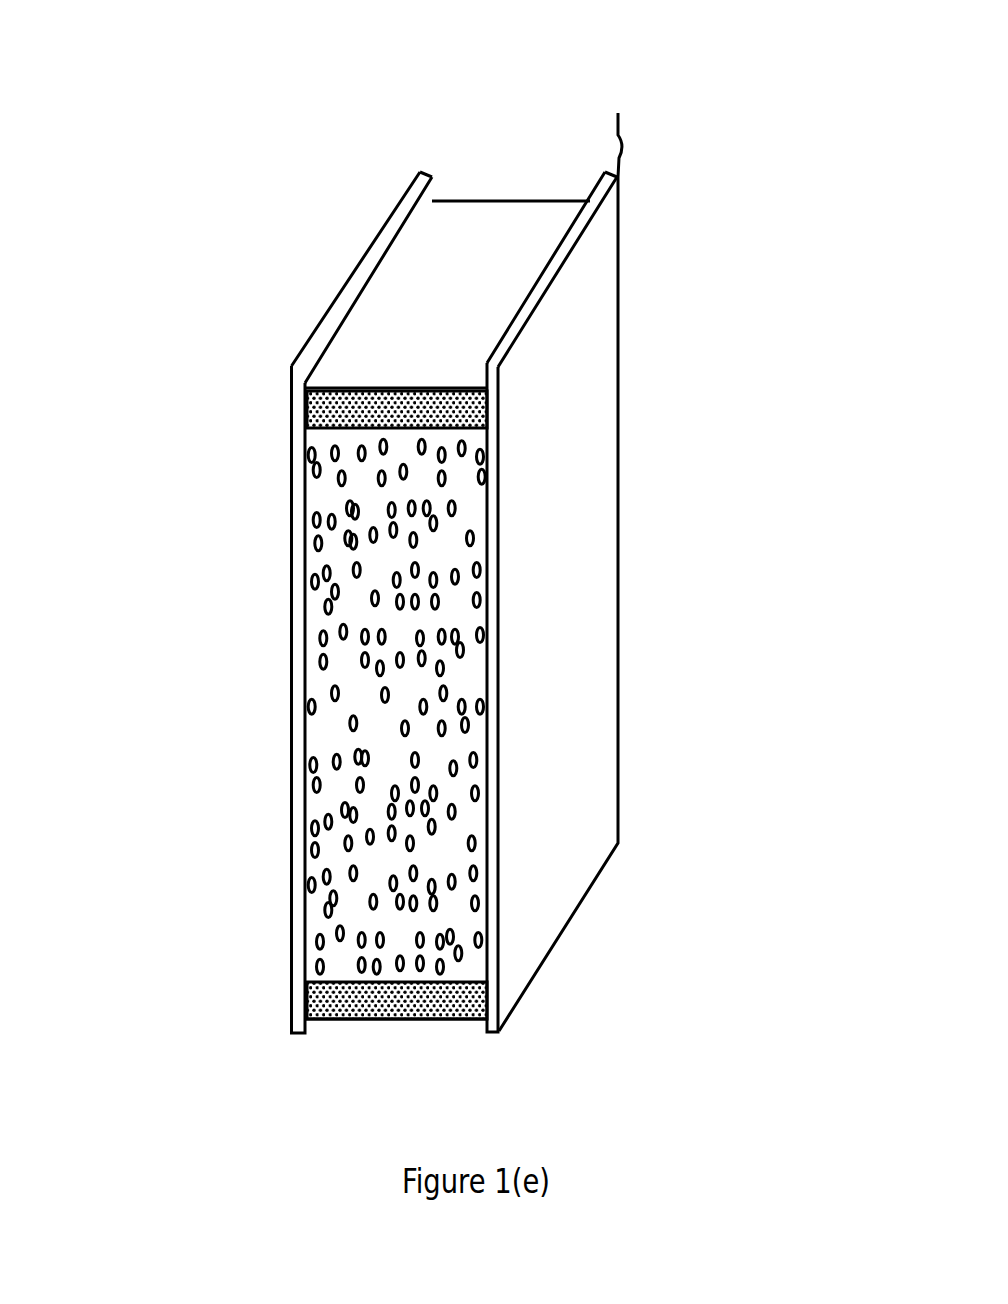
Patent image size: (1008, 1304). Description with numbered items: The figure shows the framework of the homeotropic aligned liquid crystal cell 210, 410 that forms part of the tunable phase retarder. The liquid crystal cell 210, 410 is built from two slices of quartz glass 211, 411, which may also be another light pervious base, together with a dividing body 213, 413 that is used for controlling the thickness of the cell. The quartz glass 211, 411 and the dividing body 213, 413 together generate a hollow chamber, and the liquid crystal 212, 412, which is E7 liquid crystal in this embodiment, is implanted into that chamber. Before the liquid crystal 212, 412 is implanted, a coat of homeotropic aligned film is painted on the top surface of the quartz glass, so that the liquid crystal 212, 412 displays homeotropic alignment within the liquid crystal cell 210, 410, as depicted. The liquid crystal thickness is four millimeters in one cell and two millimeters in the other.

The liquid crystal cell 210 is at (464, 582).
The liquid crystal cell 410 is at (464, 582).
The quartz glass 211 is at (583, 529).
The quartz glass 411 is at (427, 172).
The liquid crystal 212 is at (266, 703).
The liquid crystal 412 is at (330, 718).
The dividing body 213 is at (443, 764).
The dividing body 413 is at (382, 1000).